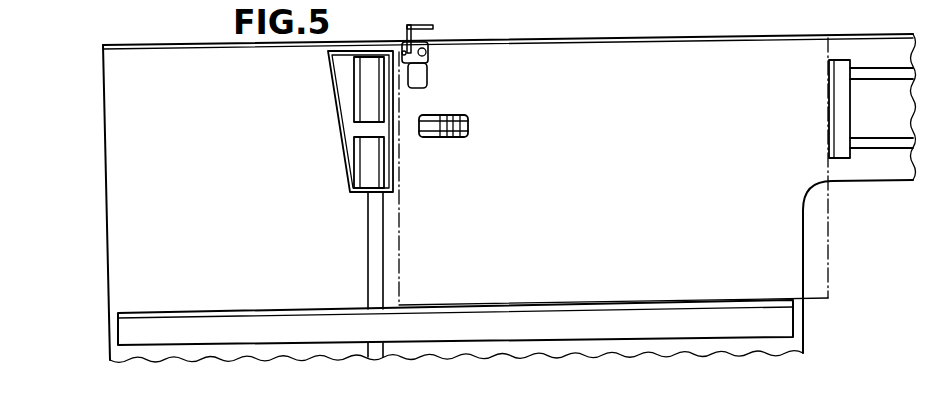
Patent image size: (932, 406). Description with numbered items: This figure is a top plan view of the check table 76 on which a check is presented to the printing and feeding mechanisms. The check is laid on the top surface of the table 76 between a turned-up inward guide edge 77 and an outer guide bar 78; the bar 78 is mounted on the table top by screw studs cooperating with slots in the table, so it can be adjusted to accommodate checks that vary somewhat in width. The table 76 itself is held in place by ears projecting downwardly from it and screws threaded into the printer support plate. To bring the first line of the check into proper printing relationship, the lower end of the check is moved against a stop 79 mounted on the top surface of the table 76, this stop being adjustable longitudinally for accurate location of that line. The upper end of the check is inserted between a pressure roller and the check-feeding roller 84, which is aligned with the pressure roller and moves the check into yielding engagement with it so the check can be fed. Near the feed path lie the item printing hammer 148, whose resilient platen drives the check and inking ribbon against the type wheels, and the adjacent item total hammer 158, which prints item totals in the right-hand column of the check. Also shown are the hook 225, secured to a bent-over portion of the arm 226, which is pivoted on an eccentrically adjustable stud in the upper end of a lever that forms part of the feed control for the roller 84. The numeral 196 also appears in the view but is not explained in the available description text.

The check table 76 is at (115, 80).
The turned-up inward guide edge 77 is at (597, 37).
The outer guide bar 78 is at (130, 328).
The stop 79 is at (840, 115).
The check-feeding roller 84 is at (440, 127).
The item printing hammer 148 is at (365, 162).
The item total hammer 158 is at (362, 80).
The hook 225 is at (405, 45).
The arm 226 is at (433, 27).
The cable 196 is at (70, 0).